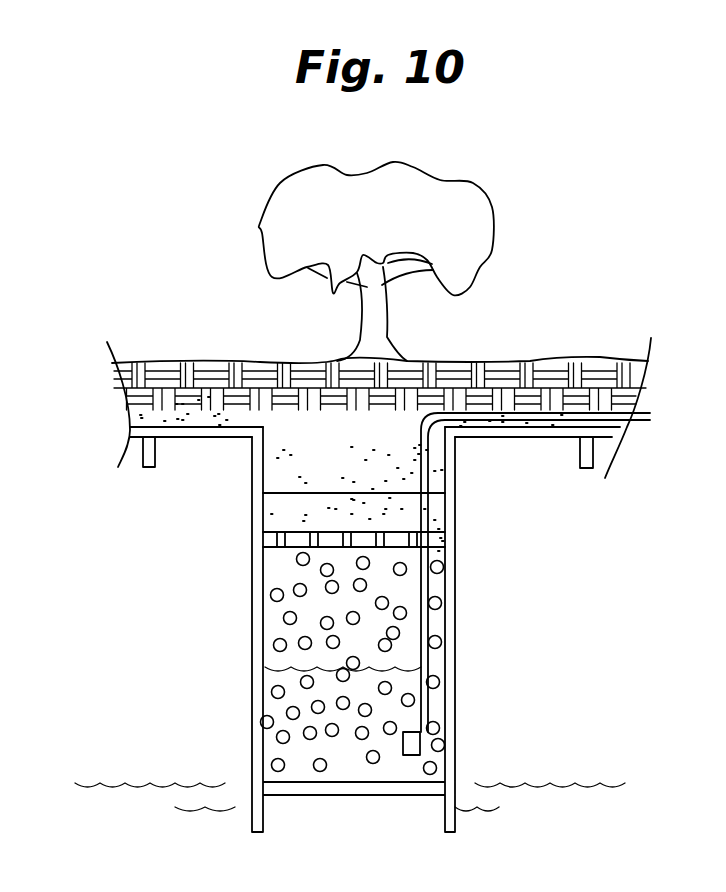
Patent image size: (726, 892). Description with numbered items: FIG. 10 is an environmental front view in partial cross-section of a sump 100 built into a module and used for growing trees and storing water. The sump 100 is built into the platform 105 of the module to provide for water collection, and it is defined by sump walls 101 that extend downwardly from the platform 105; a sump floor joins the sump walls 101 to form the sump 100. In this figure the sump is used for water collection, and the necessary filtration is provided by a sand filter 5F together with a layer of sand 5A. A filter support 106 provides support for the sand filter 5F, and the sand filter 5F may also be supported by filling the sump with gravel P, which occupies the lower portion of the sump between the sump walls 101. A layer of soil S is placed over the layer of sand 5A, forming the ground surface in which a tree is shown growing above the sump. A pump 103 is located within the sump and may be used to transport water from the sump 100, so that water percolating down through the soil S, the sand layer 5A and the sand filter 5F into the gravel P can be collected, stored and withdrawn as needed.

The sump 100 is at (162, 634).
The sump walls 101 is at (258, 718).
The pump 103 is at (420, 730).
The platform 105 is at (217, 437).
The filter support 106 is at (293, 547).
The gravel P is at (283, 622).
The layer of soil S is at (524, 358).
The layer of sand 5A is at (361, 471).
The sand filter 5F is at (361, 522).